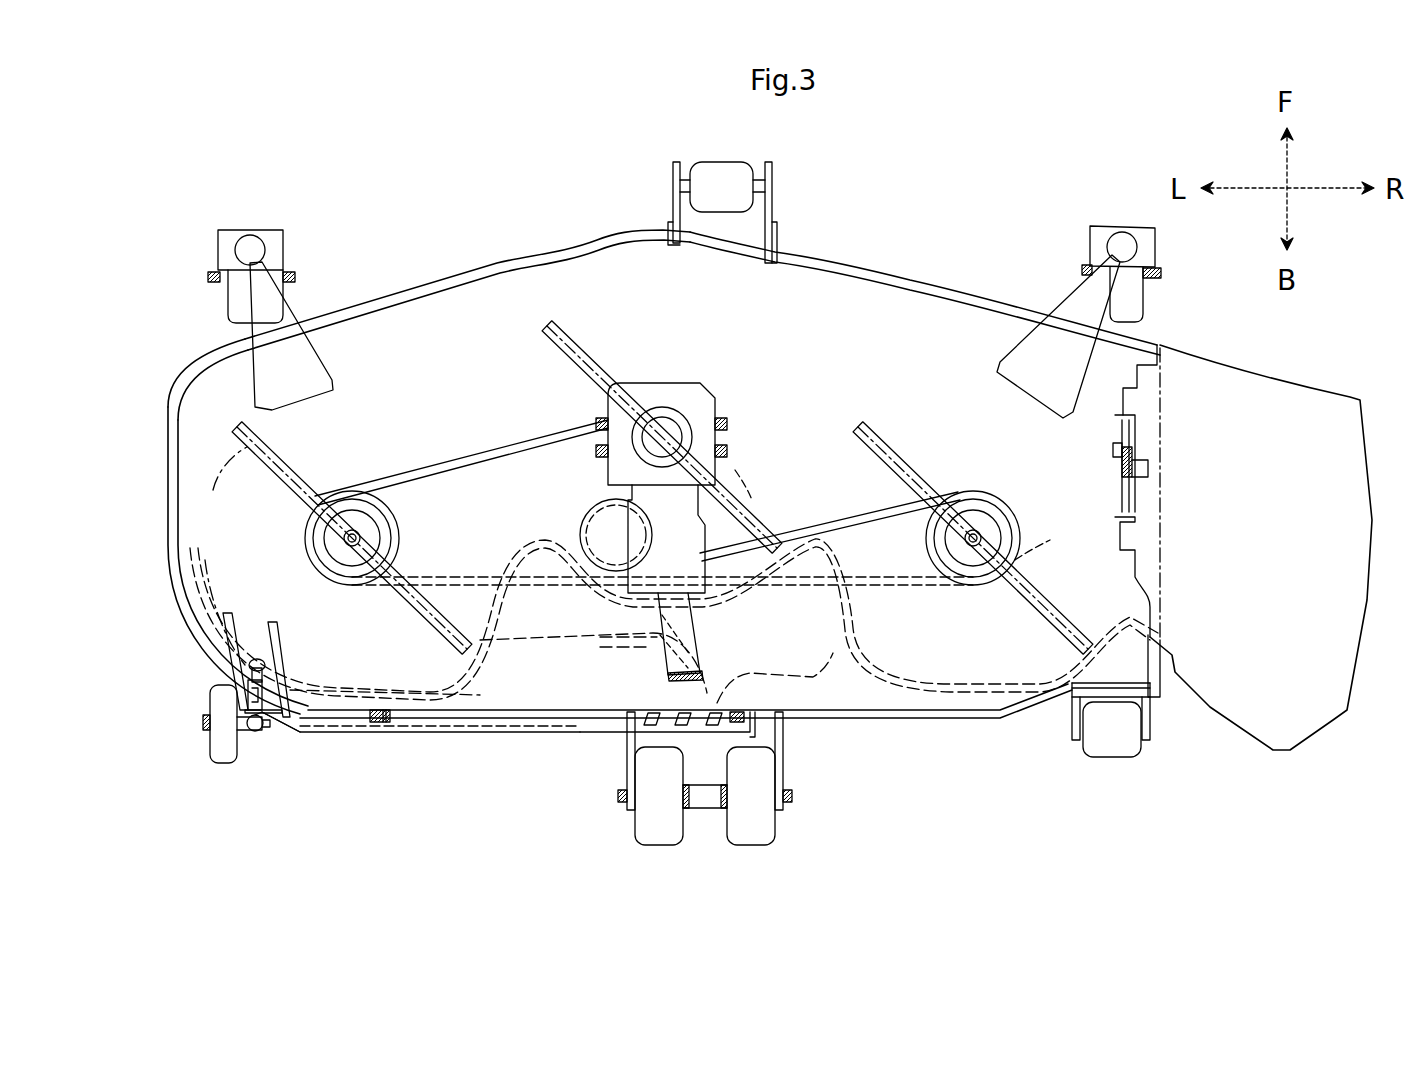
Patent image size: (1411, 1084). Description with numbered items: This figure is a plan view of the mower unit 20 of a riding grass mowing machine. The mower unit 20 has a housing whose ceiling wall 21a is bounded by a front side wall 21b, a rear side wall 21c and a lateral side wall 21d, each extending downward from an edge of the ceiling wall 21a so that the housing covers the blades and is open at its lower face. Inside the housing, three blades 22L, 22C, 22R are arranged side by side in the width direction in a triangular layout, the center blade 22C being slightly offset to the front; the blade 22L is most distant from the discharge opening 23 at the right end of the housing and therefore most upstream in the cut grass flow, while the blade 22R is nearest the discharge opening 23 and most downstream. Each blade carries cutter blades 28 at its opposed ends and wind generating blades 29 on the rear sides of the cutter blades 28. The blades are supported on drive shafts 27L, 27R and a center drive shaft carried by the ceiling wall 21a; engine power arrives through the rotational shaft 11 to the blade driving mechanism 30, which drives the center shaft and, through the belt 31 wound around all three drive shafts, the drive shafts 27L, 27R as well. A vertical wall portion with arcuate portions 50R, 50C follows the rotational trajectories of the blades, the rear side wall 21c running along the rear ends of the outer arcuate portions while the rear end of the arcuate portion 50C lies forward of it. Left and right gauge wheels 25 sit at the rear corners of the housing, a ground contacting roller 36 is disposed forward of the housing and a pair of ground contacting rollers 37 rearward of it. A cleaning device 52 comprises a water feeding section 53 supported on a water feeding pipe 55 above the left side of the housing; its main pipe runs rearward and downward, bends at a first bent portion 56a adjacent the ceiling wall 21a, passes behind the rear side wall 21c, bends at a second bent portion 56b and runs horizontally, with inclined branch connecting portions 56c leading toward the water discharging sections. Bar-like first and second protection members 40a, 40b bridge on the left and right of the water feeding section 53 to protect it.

The rotational shaft 11 is at (697, 627).
The mower unit 20 is at (1025, 170).
The ceiling wall 21a is at (890, 320).
The front side wall 21b is at (453, 282).
The rear side wall 21c is at (832, 722).
The lateral side wall 21d is at (180, 497).
The blade 22L is at (335, 480).
The blade 22C is at (745, 475).
The blade 22R is at (1022, 562).
The discharge opening 23 is at (1166, 460).
The gauge wheel 25 is at (225, 307).
The drive shaft 27L is at (392, 537).
The drive shaft 27R is at (983, 525).
The cutter blades 28 is at (548, 356).
The wind generating blades 29 is at (588, 352).
The blade driving mechanism 30 is at (700, 385).
The belt 31 is at (466, 458).
The ground contacting roller 36 is at (745, 166).
The ground contacting rollers 37 is at (750, 825).
The first protection member 40a is at (218, 665).
The second protection member 40b is at (283, 660).
The arcuate portion 50C is at (577, 548).
The arcuate portion 50R is at (388, 692).
The cleaning device 52 is at (510, 770).
The water feeding section 53 is at (256, 666).
The water feeding pipe 55 is at (440, 740).
The first bent portion 56a is at (270, 690).
The second bent portion 56b is at (305, 733).
The branch connecting portions 56c is at (714, 718).